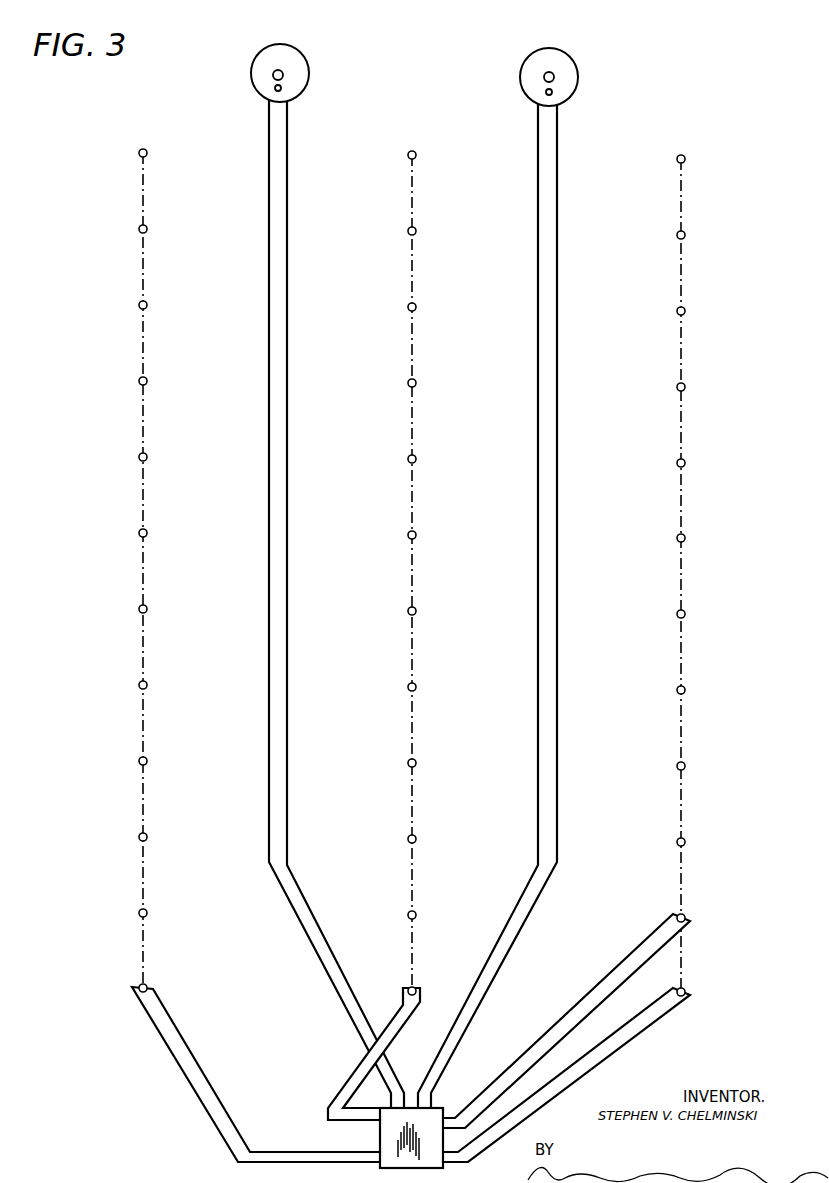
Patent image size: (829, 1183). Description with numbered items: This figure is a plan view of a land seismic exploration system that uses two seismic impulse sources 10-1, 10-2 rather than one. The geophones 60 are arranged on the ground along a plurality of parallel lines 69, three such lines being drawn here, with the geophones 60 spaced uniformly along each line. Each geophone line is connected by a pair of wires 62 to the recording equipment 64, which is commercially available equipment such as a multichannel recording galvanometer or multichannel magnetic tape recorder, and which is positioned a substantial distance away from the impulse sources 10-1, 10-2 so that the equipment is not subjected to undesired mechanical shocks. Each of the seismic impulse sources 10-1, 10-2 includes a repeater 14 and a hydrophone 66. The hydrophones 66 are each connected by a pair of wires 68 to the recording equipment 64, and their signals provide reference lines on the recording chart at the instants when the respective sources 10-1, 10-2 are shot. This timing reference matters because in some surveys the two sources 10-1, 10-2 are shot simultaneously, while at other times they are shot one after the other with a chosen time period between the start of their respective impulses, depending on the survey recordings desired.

The seismic impulse source 10-1 is at (310, 58).
The seismic impulse source 10-2 is at (582, 64).
The repeater 14 is at (273, 75).
The geophones 60 is at (147, 152).
The pairs of wires 62 is at (190, 1072).
The recording equipment 64 is at (438, 1110).
The hydrophone 66 is at (282, 89).
The pair of wires 68 is at (268, 388).
The parallel lines 69 is at (146, 500).